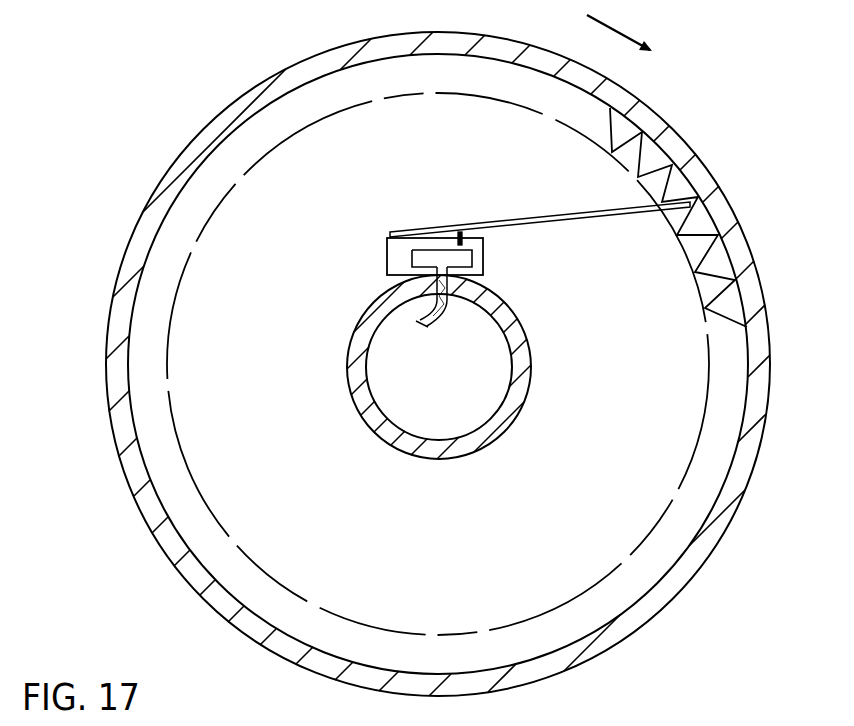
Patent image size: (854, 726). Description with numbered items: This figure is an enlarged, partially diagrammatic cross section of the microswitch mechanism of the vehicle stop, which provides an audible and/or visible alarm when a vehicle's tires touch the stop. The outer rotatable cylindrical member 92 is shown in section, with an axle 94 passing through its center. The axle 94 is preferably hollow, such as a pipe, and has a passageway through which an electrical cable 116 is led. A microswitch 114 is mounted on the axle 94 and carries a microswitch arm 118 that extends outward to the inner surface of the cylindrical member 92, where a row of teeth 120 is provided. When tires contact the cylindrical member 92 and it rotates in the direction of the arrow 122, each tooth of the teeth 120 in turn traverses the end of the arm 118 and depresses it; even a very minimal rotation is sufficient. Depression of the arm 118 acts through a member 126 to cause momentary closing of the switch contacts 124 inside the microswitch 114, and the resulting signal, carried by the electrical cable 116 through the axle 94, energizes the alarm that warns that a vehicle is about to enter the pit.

The cylindrical member 92 is at (760, 450).
The axle 94 is at (355, 412).
The microswitch 114 is at (492, 275).
The electrical cable 116 is at (422, 322).
The microswitch arm 118 is at (512, 217).
The teeth 120 is at (663, 183).
The arrow 122 is at (618, 27).
The switch contacts 124 is at (449, 250).
The member 126 is at (462, 233).